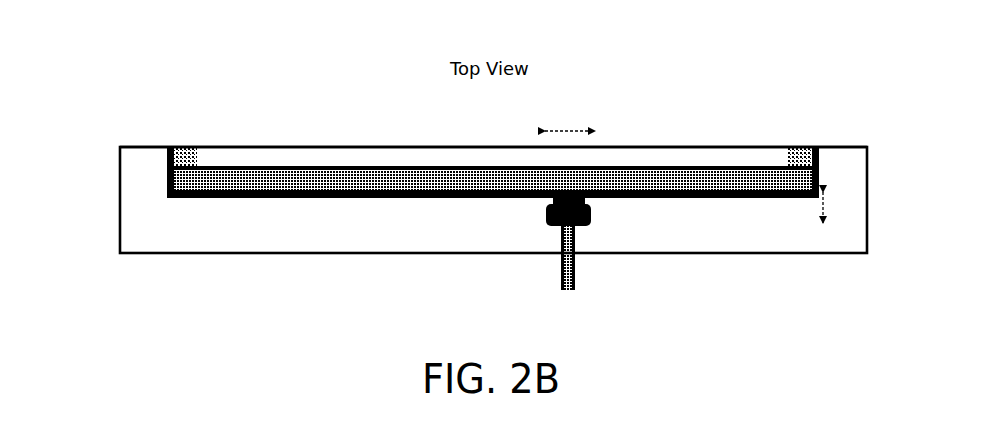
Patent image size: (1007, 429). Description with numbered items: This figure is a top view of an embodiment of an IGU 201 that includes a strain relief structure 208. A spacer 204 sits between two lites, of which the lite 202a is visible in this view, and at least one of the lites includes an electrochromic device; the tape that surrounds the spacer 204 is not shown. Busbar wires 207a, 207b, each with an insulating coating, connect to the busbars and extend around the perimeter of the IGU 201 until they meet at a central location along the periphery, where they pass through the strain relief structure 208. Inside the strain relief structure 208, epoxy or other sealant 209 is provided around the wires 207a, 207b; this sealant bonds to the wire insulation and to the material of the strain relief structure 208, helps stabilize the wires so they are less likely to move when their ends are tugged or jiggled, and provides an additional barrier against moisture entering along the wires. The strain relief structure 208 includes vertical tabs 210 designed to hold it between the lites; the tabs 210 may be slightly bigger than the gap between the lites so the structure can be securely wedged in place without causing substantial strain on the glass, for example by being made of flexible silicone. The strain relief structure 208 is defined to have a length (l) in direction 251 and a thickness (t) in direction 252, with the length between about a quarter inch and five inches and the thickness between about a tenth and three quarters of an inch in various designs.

The IGU 201 is at (68, 128).
The lite 202a is at (653, 153).
The spacer 204 is at (795, 150).
The busbar wire 207a is at (672, 195).
The busbar wire 207b is at (450, 195).
The strain relief structure 208 is at (578, 228).
The epoxy or other sealant 209 is at (549, 206).
The vertical tabs 210 is at (590, 213).
The length direction 251 is at (568, 116).
The thickness direction 252 is at (854, 207).